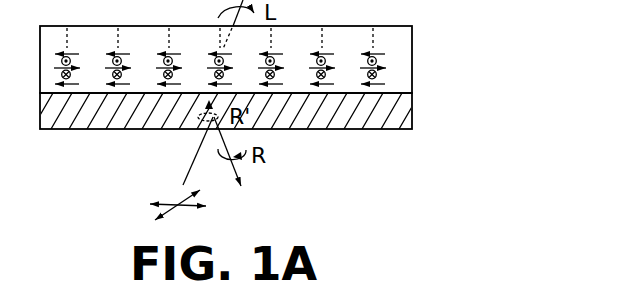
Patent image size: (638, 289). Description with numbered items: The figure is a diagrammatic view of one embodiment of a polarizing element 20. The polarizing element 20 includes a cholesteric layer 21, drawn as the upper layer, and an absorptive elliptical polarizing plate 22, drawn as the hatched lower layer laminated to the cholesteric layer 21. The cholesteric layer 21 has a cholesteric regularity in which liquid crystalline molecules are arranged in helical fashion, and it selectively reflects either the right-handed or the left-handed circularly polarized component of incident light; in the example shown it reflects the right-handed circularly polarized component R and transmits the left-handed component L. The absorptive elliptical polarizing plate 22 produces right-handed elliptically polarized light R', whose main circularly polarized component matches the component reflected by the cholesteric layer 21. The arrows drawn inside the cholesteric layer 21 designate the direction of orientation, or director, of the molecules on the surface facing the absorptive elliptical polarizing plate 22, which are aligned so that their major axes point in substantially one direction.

The polarizing element 20 is at (284, 72).
The cholesteric layer 21 is at (402, 67).
The absorptive elliptical polarizing plate 22 is at (402, 110).